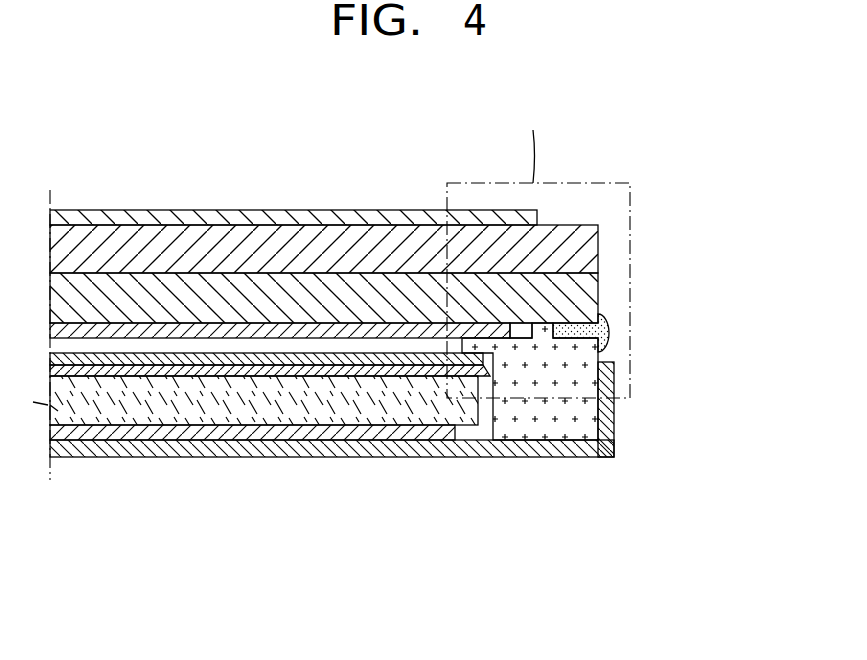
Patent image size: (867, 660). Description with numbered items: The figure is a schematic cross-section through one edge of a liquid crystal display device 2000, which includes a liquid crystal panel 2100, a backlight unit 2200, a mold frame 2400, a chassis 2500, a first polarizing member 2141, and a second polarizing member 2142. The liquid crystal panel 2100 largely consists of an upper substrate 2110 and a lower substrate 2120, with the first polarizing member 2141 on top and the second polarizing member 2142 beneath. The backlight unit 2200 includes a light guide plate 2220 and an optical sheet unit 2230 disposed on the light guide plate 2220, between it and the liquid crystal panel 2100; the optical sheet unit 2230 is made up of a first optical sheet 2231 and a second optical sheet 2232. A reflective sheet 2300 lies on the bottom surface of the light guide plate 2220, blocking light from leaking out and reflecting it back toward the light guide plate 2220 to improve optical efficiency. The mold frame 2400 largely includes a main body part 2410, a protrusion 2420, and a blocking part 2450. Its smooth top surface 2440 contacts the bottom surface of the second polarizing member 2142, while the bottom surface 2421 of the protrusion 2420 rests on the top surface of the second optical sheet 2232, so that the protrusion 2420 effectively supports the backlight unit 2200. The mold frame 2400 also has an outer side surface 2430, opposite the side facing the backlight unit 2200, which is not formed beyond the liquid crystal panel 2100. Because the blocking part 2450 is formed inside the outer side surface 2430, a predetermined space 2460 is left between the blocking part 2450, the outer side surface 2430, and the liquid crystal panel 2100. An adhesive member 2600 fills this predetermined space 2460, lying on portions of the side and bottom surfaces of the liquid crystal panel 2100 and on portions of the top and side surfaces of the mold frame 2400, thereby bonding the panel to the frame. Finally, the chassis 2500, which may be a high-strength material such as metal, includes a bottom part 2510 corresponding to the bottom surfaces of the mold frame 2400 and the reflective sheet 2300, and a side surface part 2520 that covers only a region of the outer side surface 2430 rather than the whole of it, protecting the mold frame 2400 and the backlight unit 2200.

The liquid crystal display device 2000 is at (645, 113).
The liquid crystal panel 2100 is at (419, 247).
The upper substrate 2110 is at (598, 247).
The lower substrate 2120 is at (598, 288).
The first polarizing member 2141 is at (538, 218).
The second polarizing member 2142 is at (137, 327).
The backlight unit 2200 is at (270, 488).
The light guide plate 2220 is at (328, 407).
The optical sheet unit 2230 is at (270, 467).
The first optical sheet 2231 is at (240, 372).
The second optical sheet 2232 is at (200, 363).
The reflective sheet 2300 is at (403, 440).
The mold frame 2400 is at (625, 397).
The main body part 2410 is at (500, 385).
The protrusion 2420 is at (547, 385).
The bottom surface of the protrusion 2421 is at (664, 456).
The outer side surface 2430 is at (495, 383).
The smooth top surface 2440 is at (497, 358).
The blocking part 2450 is at (540, 336).
The predetermined space 2460 is at (592, 330).
The chassis 2500 is at (351, 471).
The bottom part 2510 is at (537, 457).
The side surface part 2520 is at (615, 457).
The adhesive member 2600 is at (603, 320).